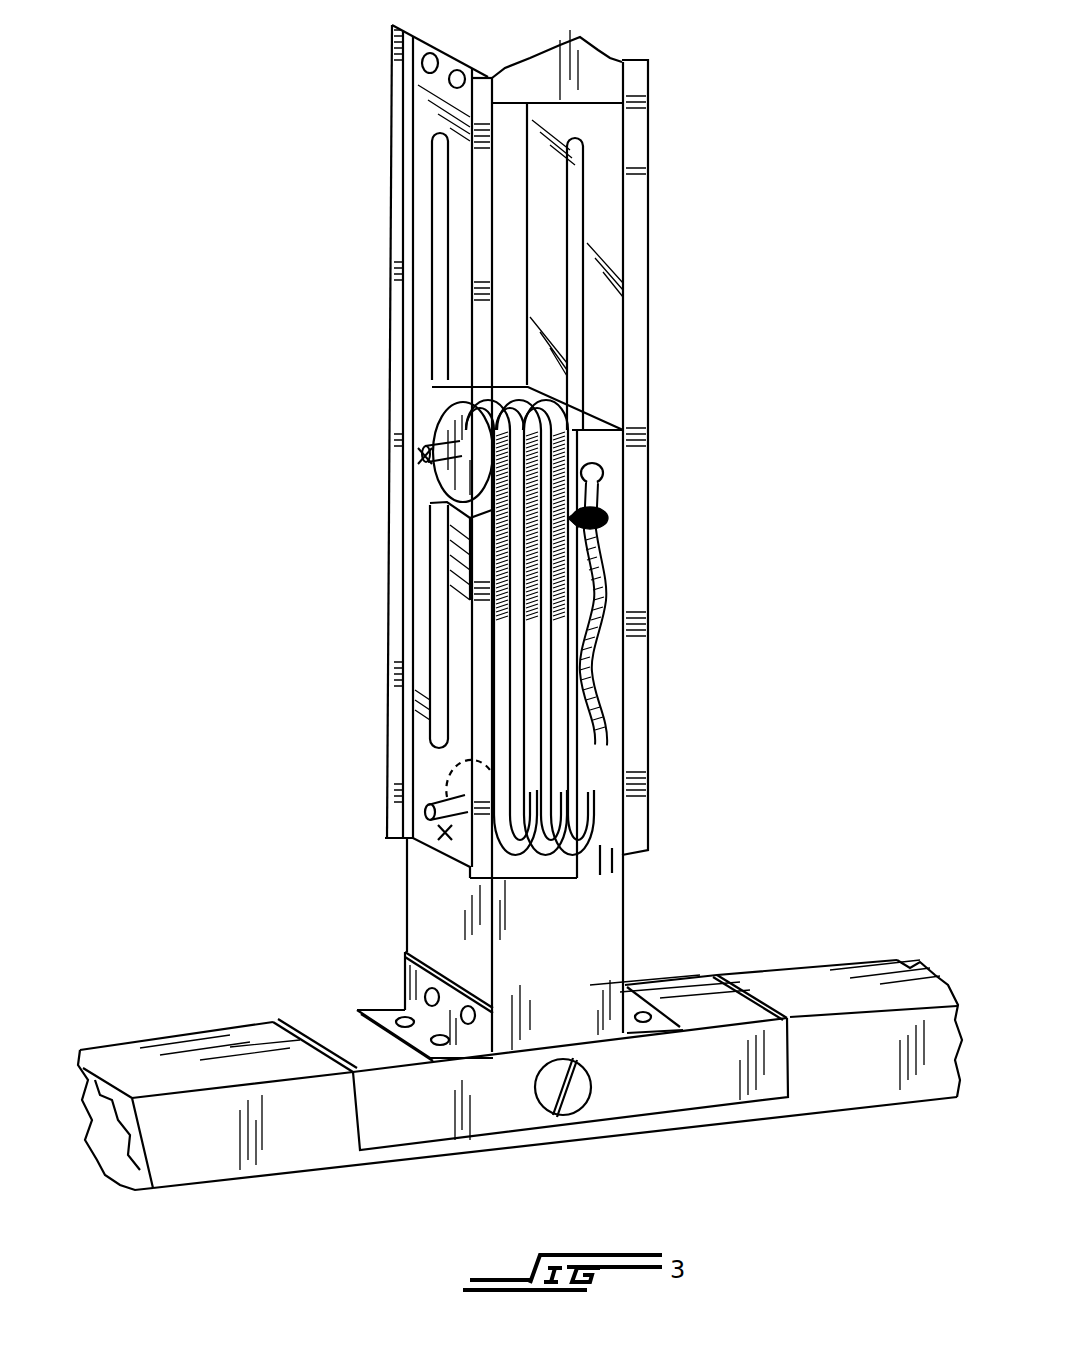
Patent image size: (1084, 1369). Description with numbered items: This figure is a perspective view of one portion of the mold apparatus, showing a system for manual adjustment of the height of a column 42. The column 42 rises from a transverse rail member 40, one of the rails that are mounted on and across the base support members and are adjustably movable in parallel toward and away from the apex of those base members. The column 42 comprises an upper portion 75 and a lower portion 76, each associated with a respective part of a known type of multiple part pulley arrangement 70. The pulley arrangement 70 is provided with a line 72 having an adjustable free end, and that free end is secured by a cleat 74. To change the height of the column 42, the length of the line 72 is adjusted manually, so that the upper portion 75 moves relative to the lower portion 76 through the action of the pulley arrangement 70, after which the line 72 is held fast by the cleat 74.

The transverse rail member 40 is at (757, 983).
The column 42 is at (648, 165).
The multiple part pulley arrangement 70 is at (527, 853).
The line 72 is at (605, 685).
The cleat 74 is at (600, 517).
The upper portion 75 is at (612, 325).
The lower portion 76 is at (618, 958).